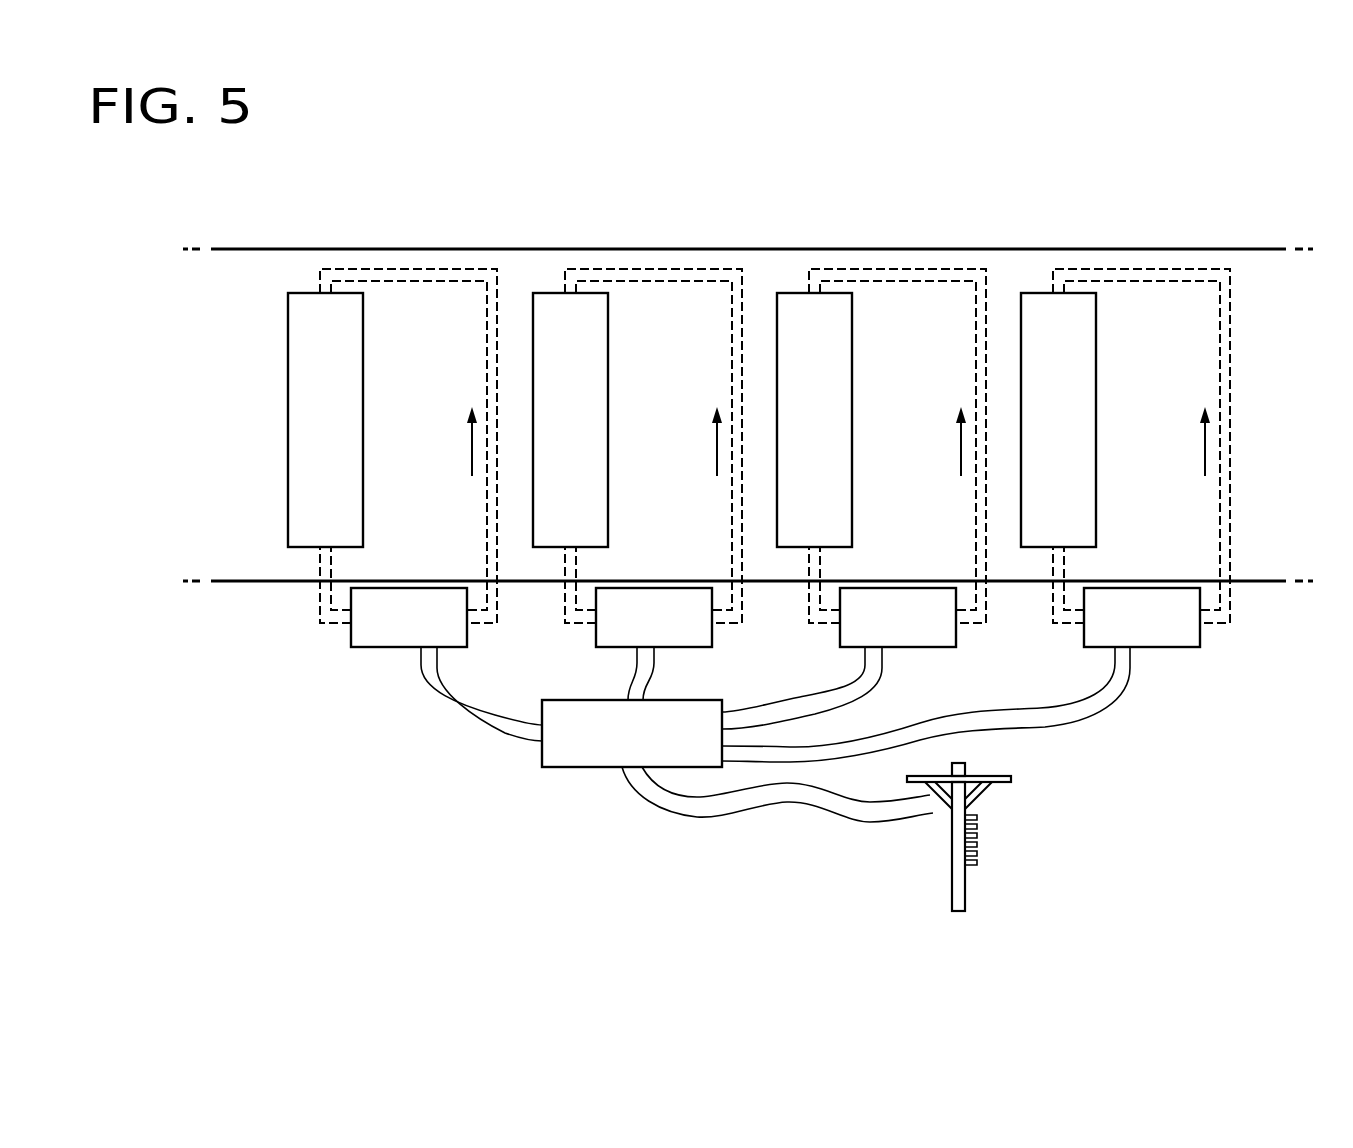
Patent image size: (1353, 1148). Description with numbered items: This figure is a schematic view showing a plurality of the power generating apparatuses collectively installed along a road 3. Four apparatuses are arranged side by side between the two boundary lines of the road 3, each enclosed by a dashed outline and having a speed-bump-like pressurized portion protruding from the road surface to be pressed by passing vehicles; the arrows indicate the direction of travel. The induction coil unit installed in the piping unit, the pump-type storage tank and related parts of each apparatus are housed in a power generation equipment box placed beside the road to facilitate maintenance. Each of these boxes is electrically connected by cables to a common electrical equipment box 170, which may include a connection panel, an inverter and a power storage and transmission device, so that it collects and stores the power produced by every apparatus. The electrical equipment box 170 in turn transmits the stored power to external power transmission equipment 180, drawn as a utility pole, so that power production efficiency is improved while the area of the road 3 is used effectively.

The road 3 is at (253, 249).
The electrical equipment box 170 is at (562, 770).
The power transmission equipment 180 is at (988, 836).